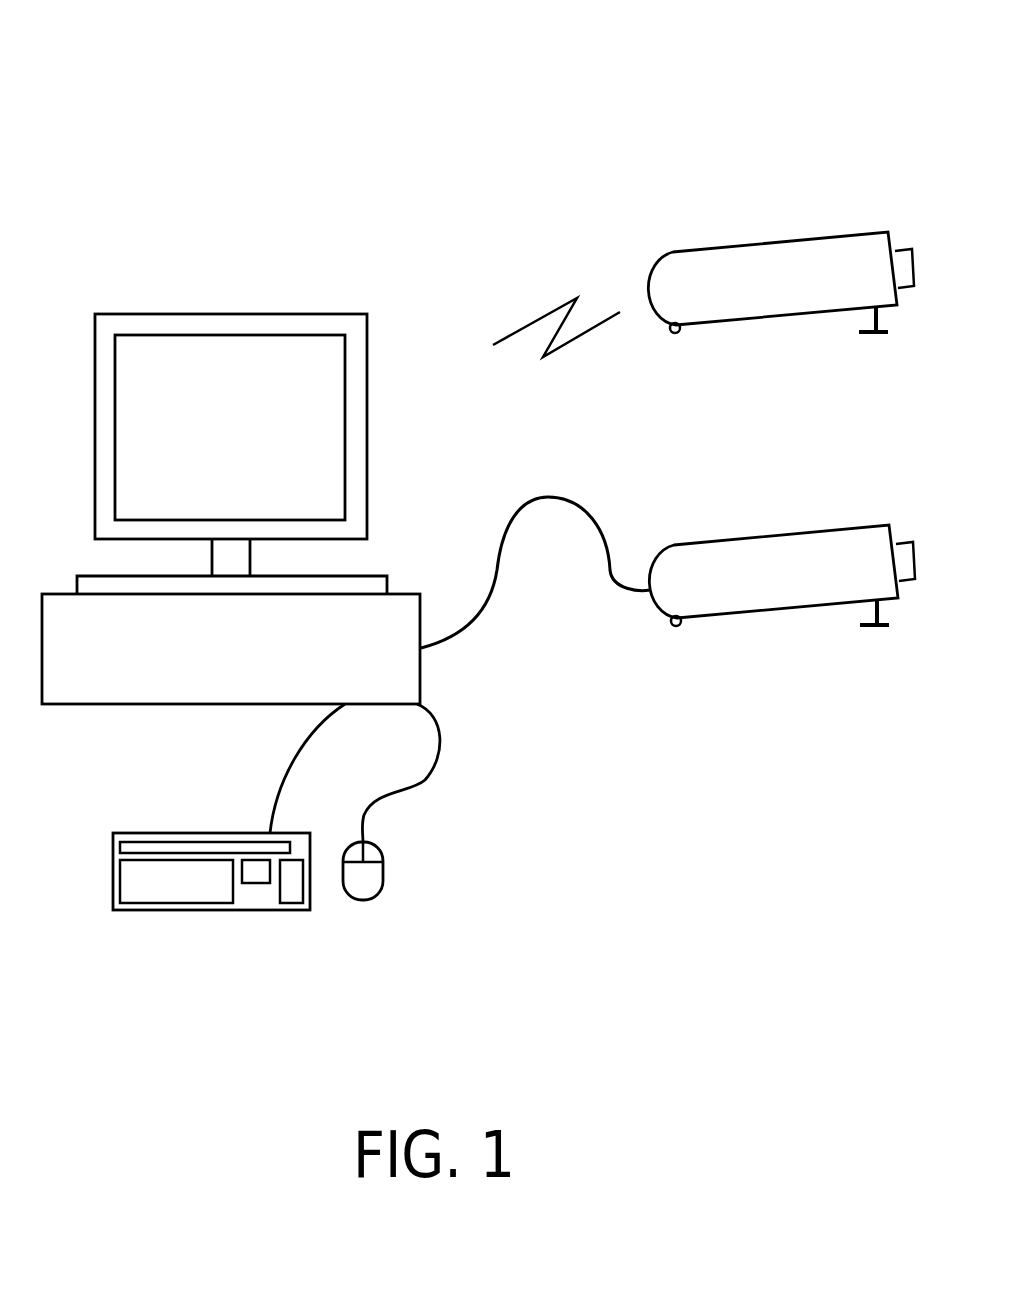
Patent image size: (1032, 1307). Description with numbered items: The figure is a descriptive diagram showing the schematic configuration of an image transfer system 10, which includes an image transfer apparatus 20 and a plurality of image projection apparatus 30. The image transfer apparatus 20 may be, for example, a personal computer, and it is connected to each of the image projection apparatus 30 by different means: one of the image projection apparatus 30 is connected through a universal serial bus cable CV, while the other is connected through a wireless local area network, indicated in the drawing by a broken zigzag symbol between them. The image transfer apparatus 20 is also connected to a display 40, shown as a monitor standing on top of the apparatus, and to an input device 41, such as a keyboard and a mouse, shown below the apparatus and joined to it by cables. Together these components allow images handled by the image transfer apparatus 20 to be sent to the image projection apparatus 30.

The image transfer system 10 is at (455, 116).
The image transfer apparatus 20 is at (148, 704).
The image projection apparatus 30 is at (752, 262).
The display 40 is at (216, 323).
The input device 41 is at (255, 937).
The USB cable CV is at (562, 512).